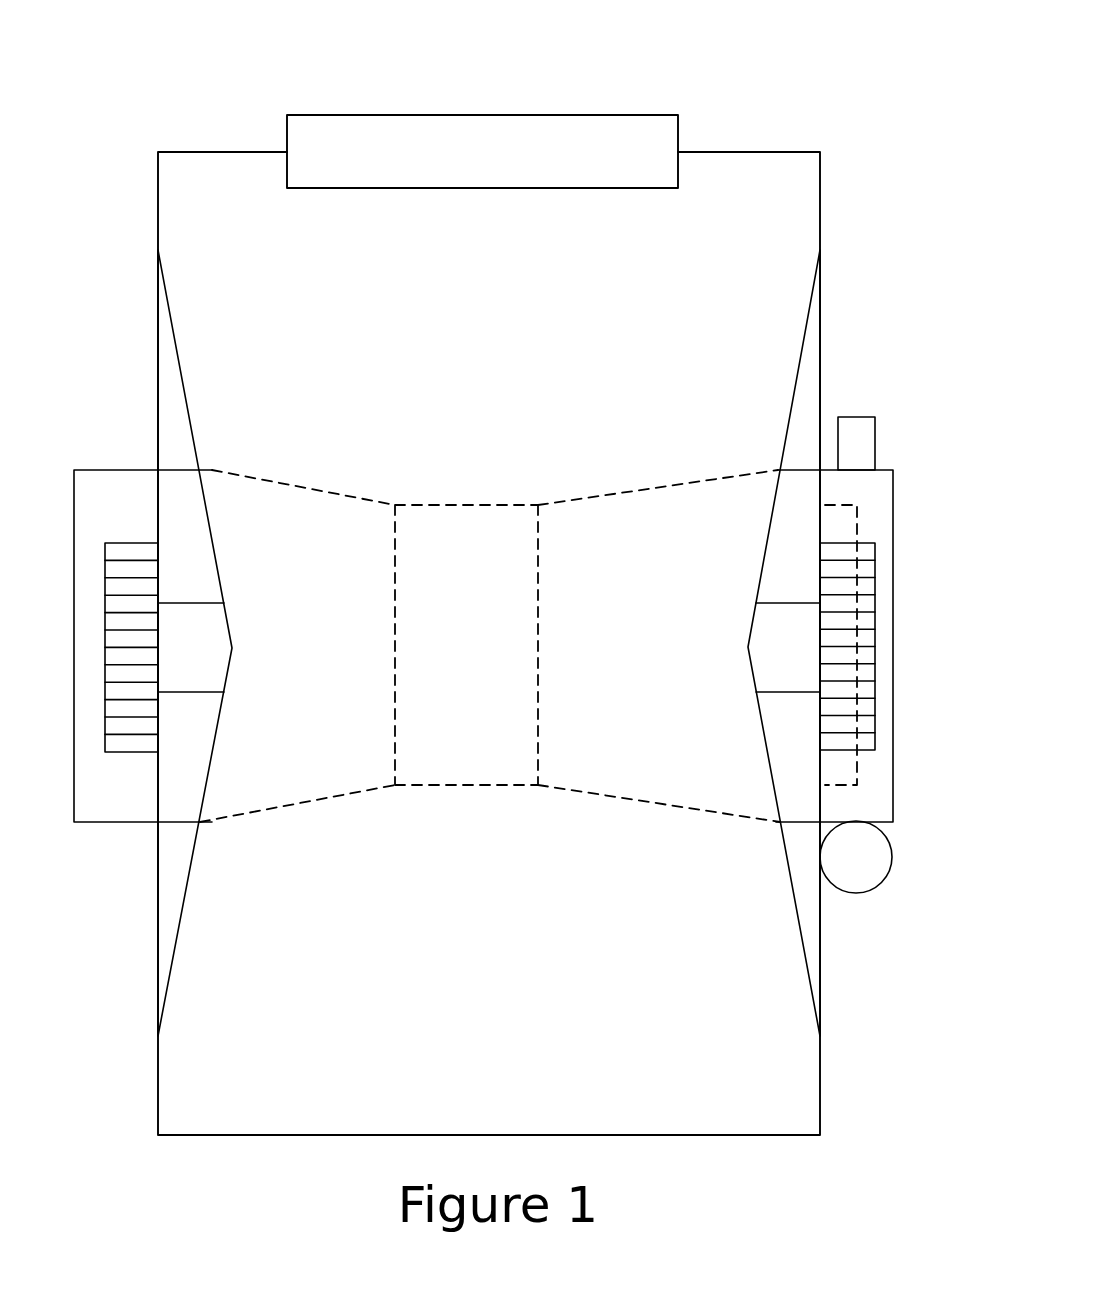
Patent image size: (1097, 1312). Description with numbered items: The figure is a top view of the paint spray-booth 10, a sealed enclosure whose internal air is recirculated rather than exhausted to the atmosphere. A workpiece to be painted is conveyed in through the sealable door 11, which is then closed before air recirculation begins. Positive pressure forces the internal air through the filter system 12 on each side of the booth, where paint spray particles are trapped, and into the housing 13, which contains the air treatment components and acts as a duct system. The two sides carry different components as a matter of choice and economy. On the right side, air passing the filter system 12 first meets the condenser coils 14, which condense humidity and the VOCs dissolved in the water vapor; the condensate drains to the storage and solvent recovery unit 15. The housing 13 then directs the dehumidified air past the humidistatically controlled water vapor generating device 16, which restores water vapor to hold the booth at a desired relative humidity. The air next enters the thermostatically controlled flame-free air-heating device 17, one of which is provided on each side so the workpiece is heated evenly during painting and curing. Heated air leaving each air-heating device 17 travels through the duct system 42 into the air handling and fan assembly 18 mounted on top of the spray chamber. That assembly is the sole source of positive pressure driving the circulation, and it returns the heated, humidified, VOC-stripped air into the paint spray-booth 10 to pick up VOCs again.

The paint spray-booth 10 is at (505, 570).
The sealable door 11 is at (482, 103).
The filter system 12 is at (491, 643).
The housing 13 is at (494, 604).
The condenser coils 14 is at (883, 645).
The storage and solvent recovery unit 15 is at (881, 886).
The humidistatically controlled water vapor generating device 16 is at (864, 403).
The thermostatically controlled flame-free air-heating device 17 is at (509, 749).
The air handling and fan assembly 18 is at (466, 603).
The duct system 42 is at (490, 579).